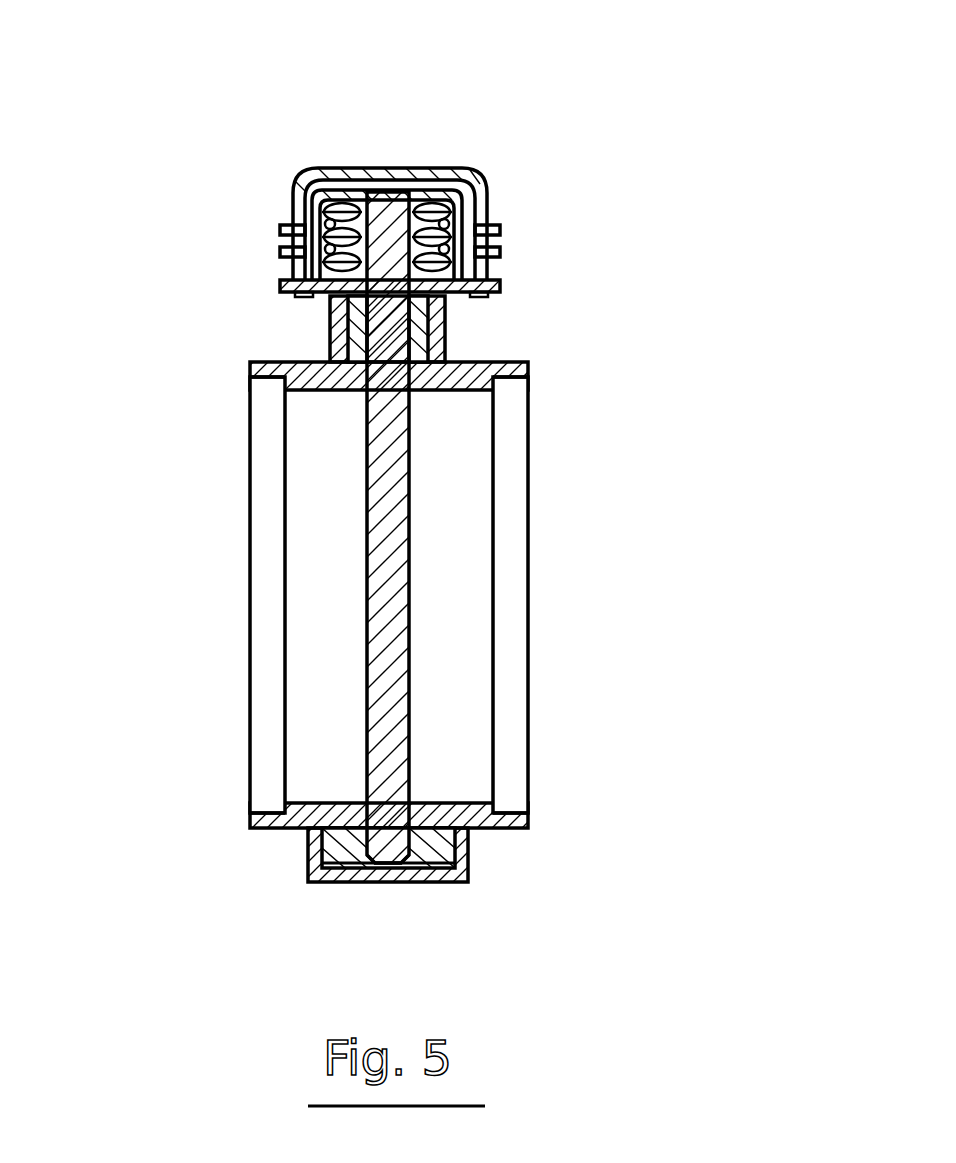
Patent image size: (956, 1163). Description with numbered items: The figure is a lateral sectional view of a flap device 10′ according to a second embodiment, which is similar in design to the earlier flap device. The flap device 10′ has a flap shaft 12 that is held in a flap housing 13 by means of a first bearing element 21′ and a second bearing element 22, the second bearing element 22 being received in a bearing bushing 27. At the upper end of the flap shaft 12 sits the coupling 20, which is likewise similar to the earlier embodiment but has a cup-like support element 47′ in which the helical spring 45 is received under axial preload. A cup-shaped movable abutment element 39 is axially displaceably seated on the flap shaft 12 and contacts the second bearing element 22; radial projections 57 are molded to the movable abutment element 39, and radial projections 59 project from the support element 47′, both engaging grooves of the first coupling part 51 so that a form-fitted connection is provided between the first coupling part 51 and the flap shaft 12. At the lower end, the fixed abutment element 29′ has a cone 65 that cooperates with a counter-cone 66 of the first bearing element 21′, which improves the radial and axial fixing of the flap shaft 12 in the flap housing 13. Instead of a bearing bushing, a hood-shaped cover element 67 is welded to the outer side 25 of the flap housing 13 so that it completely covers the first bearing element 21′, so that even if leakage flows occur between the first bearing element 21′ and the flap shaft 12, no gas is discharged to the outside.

The flap device 10′ is at (585, 140).
The coupling 20 is at (268, 222).
The helical spring 45 is at (343, 200).
The cup-like support element 47′ is at (440, 200).
The first coupling part 51 is at (475, 178).
The radial projections 59 is at (505, 228).
The radial projections 57 is at (500, 252).
The movable abutment element 39 is at (490, 267).
The bearing bushing 27 is at (330, 328).
The second bearing element 22 is at (330, 317).
The flap shaft 12 is at (383, 540).
The outer side 25 is at (280, 835).
The first bearing element 21′ is at (303, 847).
The hood-shaped cover element 67 is at (317, 860).
The counter-cone 66 is at (350, 883).
The fixed abutment element 29′ is at (370, 863).
The cone 65 is at (430, 853).
The flap housing 13 is at (507, 830).